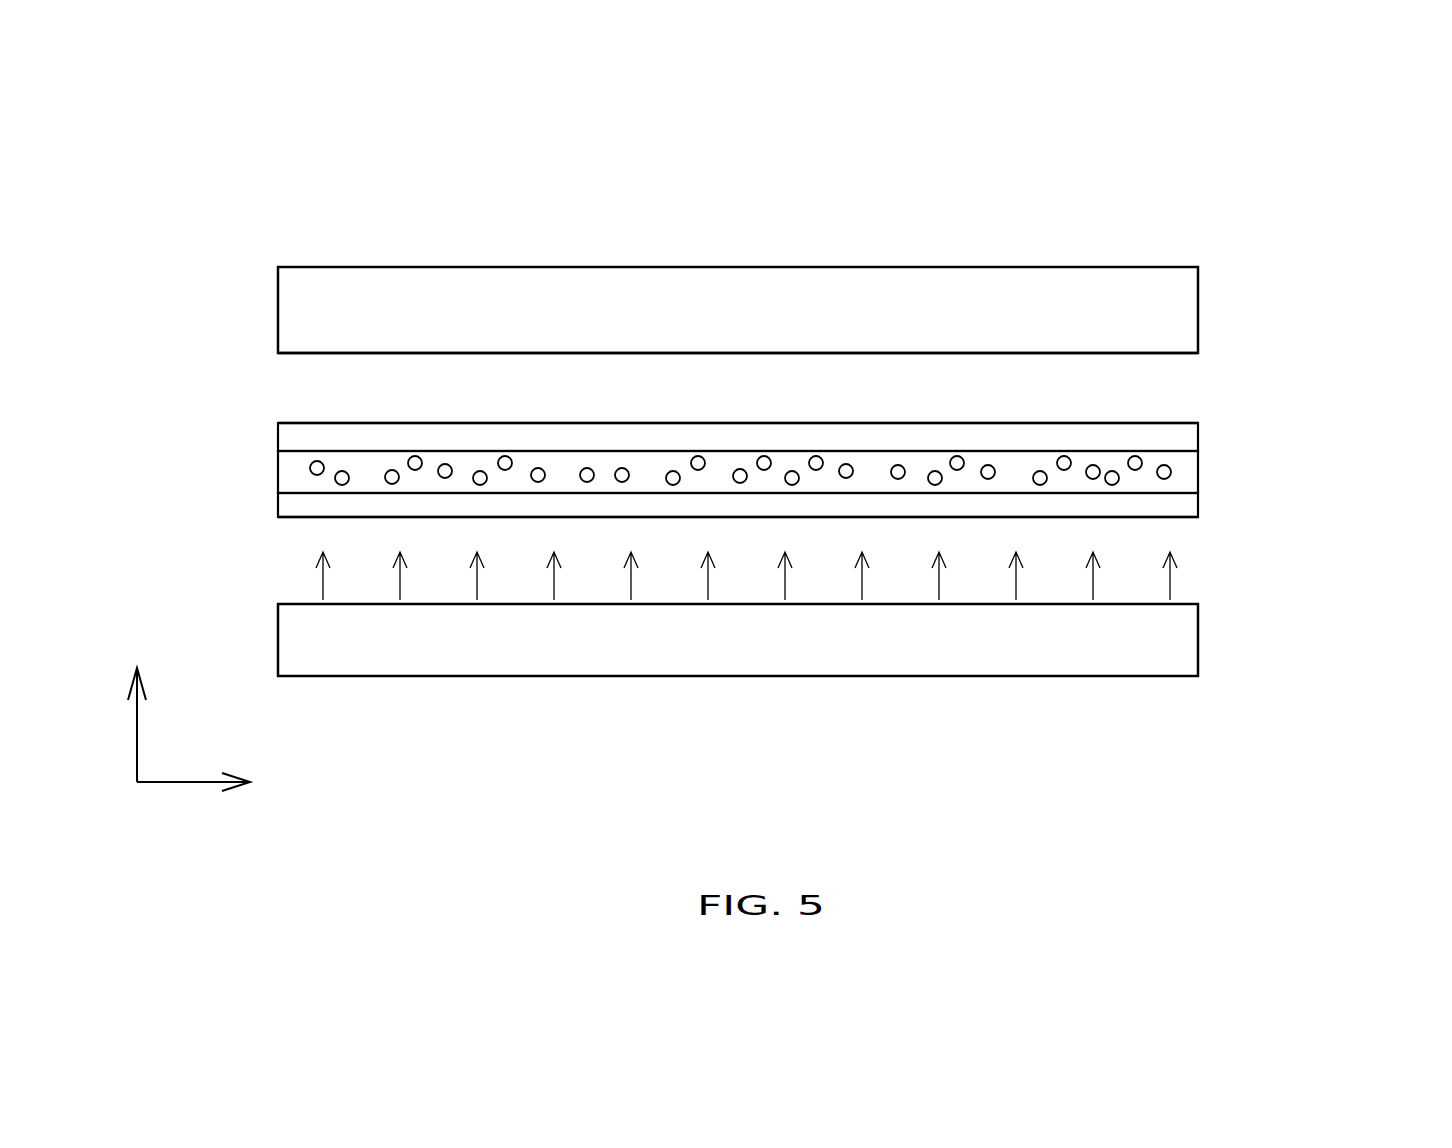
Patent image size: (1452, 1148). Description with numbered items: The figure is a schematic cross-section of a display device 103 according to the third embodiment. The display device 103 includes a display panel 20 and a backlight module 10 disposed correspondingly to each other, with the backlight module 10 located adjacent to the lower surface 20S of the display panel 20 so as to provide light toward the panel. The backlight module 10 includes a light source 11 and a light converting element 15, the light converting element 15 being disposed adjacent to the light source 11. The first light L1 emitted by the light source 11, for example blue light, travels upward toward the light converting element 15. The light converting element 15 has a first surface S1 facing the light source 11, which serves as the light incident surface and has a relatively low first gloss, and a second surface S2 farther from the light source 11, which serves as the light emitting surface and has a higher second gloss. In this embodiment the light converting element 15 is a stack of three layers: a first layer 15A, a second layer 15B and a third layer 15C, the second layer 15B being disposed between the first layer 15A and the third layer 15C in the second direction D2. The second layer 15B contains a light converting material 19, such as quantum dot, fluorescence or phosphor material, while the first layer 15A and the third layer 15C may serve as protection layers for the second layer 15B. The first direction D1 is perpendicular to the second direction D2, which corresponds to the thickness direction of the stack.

The display device 103 is at (1188, 153).
The display panel 20 is at (1175, 305).
The lower surface 20S is at (1181, 353).
The second surface S2 is at (1140, 423).
The light converting element 15 is at (777, 472).
The third layer 15C is at (1185, 434).
The second layer 15B is at (1187, 472).
The first layer 15A is at (1187, 508).
The light converting material 19 is at (310, 469).
The first surface S1 is at (1138, 517).
The backlight module 10 is at (807, 529).
The light source 11 is at (815, 640).
The first light L1 is at (323, 585).
The first direction D1 is at (216, 785).
The second direction D2 is at (136, 706).